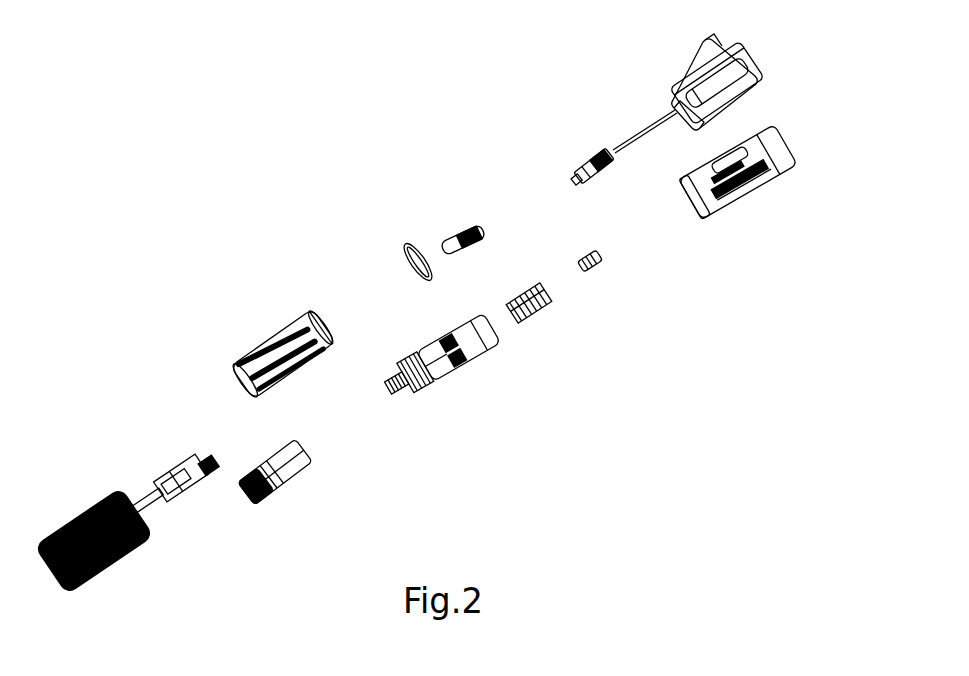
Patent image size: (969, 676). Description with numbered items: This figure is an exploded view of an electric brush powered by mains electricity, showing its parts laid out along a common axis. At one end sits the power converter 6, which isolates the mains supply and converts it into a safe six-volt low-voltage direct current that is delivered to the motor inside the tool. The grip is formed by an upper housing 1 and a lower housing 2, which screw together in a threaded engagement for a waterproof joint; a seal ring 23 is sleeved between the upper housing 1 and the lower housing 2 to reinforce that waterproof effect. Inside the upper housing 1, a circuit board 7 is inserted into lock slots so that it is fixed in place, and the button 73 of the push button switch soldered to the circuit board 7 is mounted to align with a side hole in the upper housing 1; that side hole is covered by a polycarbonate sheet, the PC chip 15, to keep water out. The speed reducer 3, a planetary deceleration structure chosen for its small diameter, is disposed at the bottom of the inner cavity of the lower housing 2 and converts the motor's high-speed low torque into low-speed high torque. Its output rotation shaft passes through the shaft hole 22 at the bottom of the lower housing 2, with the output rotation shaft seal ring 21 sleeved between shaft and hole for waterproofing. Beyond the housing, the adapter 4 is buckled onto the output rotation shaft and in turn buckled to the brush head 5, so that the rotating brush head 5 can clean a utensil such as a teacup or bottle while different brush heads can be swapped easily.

The upper housing 1 is at (753, 195).
The lower housing 2 is at (225, 320).
The output rotation shaft seal ring 21 is at (347, 307).
The shaft hole at the bottom of the lower housing 22 is at (236, 381).
The seal ring 23 is at (403, 233).
The speed reducer 3 is at (441, 381).
The adapter 4 is at (294, 479).
The brush head 5 is at (140, 487).
The power converter 6 is at (680, 75).
The circuit board 7 is at (537, 314).
The button 73 is at (596, 266).
The PC chip 15 is at (467, 222).